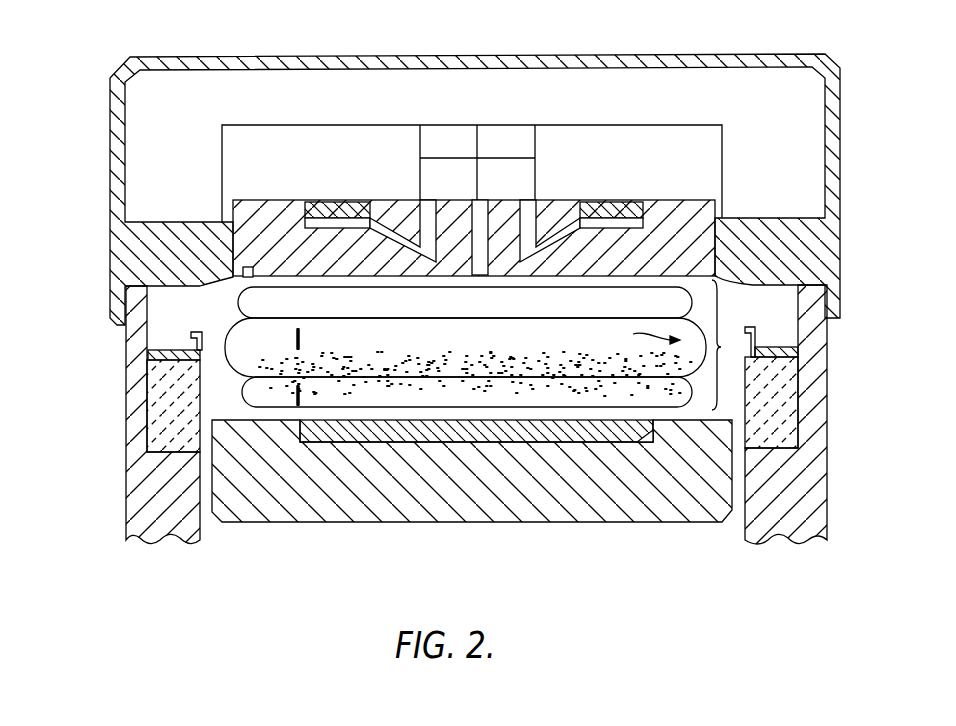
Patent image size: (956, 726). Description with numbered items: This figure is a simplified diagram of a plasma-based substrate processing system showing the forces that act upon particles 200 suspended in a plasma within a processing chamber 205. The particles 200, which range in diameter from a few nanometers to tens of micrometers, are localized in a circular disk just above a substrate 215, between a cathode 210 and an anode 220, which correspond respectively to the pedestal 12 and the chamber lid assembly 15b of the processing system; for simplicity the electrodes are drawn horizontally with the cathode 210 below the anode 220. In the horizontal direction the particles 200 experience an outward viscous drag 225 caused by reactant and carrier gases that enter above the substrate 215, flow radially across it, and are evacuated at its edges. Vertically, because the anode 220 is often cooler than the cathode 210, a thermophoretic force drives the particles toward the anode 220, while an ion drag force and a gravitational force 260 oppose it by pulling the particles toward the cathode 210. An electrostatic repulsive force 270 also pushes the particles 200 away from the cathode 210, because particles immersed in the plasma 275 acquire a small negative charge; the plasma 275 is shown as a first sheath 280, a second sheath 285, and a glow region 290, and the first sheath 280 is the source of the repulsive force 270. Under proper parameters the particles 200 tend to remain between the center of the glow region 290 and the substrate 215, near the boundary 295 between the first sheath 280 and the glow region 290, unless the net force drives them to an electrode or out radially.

The chamber lid assembly 15b is at (590, 55).
The anode 220 is at (672, 240).
The pedestal 12 is at (648, 486).
The electrostatic repulsive force 270 is at (298, 342).
The gravitational force 260 is at (298, 396).
The processing chamber 205 is at (735, 392).
The plasma 275 is at (722, 348).
The cathode 210 is at (543, 490).
The substrate 215 is at (524, 423).
The second sheath 285 is at (532, 315).
The glow region 290 is at (530, 353).
The first sheath 280 is at (525, 401).
The boundary 295 is at (406, 373).
The viscous drag 225 is at (638, 334).
The particles 200 is at (670, 384).